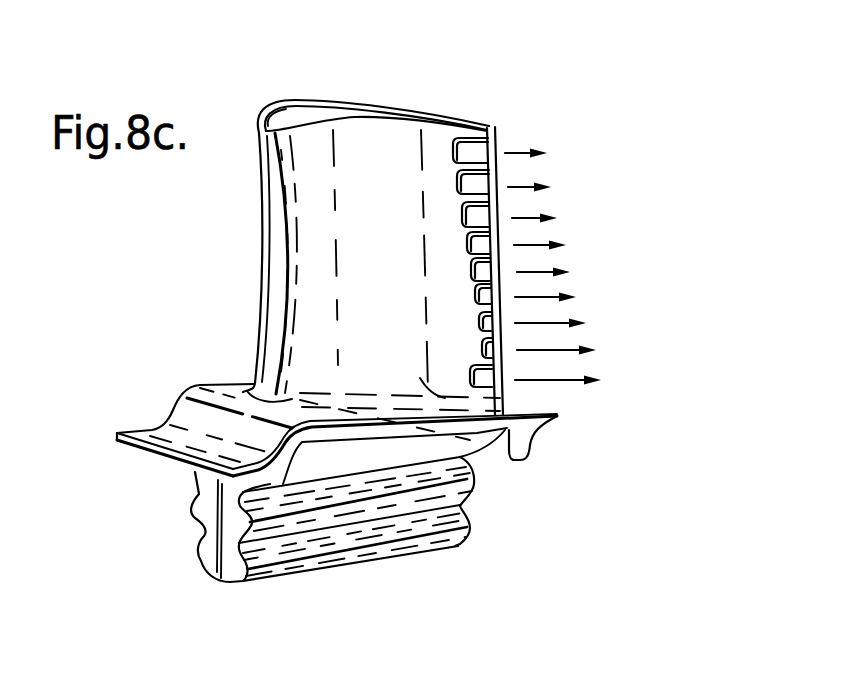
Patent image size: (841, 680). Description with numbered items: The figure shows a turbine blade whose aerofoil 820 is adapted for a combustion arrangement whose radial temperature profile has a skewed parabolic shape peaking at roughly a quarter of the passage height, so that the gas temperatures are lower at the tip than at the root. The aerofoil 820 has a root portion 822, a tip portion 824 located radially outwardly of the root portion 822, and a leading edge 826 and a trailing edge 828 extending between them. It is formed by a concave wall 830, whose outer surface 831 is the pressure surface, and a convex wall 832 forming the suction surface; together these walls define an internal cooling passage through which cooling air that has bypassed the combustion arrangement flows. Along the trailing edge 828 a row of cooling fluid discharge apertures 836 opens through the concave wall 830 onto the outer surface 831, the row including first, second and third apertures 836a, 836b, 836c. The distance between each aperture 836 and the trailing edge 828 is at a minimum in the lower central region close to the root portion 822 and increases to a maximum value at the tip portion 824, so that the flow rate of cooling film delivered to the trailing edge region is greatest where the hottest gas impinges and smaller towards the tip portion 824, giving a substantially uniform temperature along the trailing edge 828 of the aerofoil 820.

The aerofoil 820 is at (505, 87).
The root portion 822 is at (302, 403).
The tip portion 824 is at (398, 110).
The leading edge 826 is at (270, 272).
The trailing edge 828 is at (501, 258).
The concave wall 830 is at (420, 373).
The outer surface 831 is at (370, 380).
The convex wall 832 is at (284, 100).
The cooling fluid discharge apertures 836 is at (573, 284).
The first aperture 836a is at (481, 373).
The second aperture 836b is at (488, 347).
The third aperture 836c is at (488, 293).